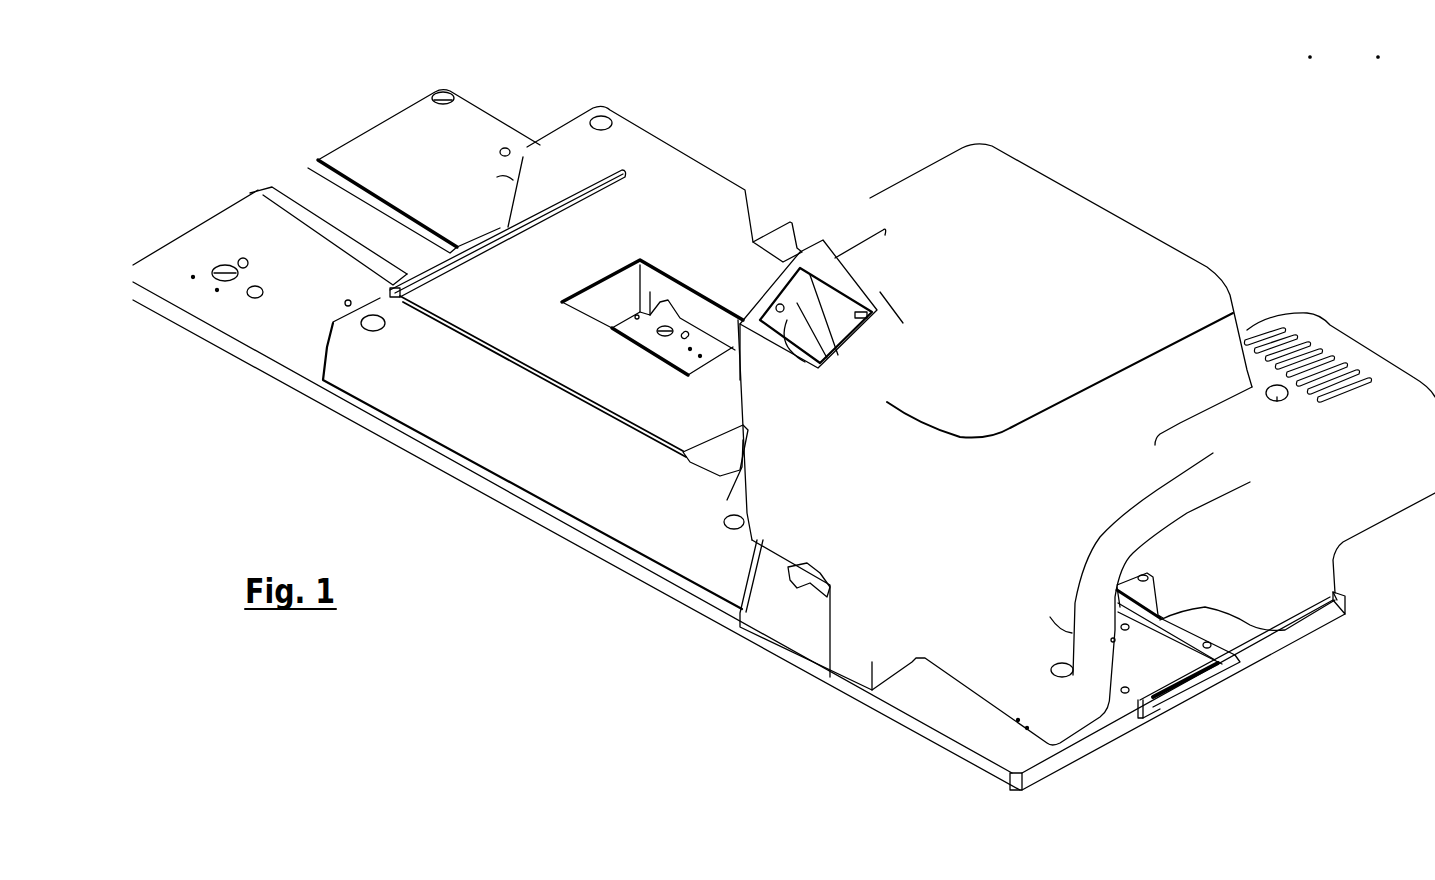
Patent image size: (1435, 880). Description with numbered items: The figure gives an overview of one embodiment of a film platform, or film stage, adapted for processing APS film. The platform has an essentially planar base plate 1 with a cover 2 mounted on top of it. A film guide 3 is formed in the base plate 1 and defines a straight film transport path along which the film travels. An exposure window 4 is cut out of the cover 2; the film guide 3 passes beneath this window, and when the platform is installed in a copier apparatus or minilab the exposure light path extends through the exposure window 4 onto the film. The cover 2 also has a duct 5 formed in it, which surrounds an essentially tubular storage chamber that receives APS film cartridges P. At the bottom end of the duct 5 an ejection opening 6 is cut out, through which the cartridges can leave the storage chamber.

The base plate 1 is at (293, 322).
The cover 2 is at (1046, 282).
The film guide 3 is at (332, 205).
The exposure window 4 is at (688, 302).
The duct 5 is at (813, 467).
The ejection opening 6 is at (800, 618).
The APS film cartridge P is at (860, 327).